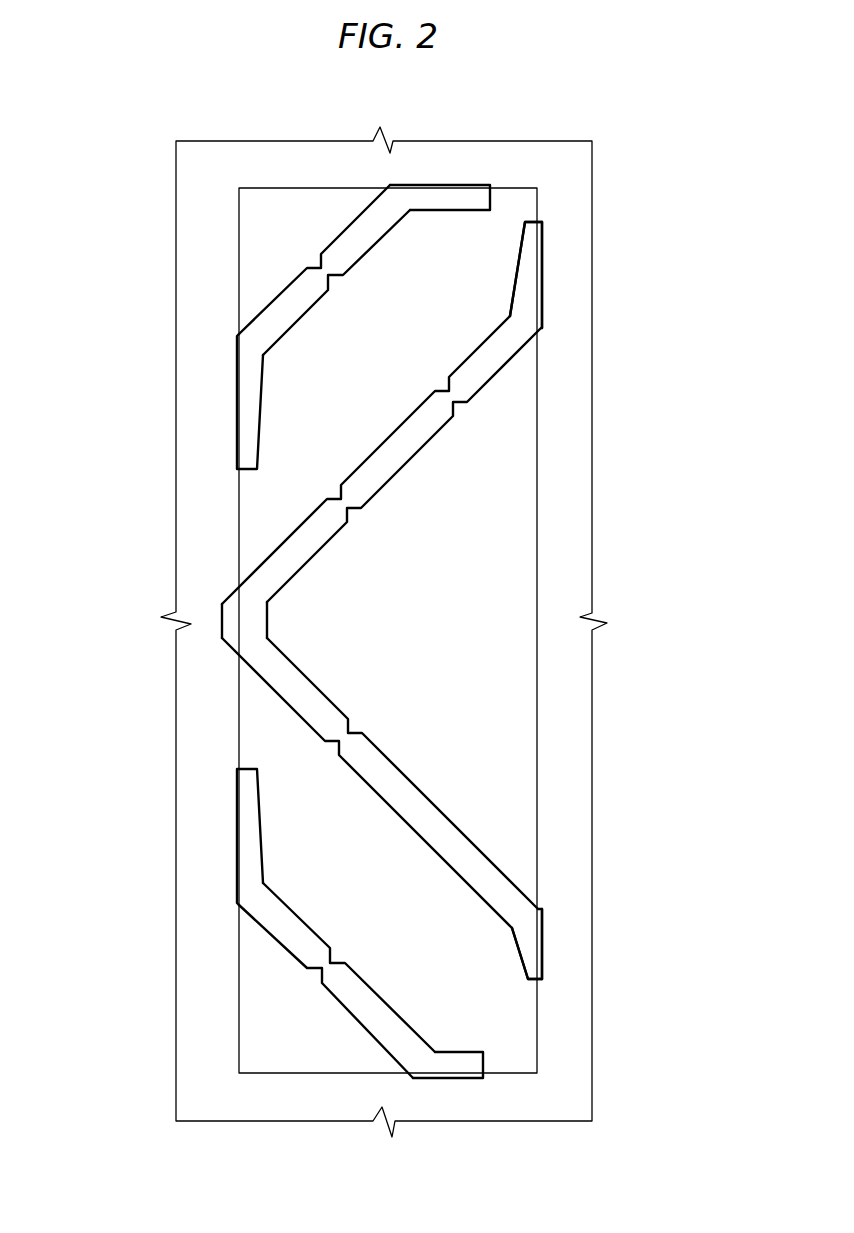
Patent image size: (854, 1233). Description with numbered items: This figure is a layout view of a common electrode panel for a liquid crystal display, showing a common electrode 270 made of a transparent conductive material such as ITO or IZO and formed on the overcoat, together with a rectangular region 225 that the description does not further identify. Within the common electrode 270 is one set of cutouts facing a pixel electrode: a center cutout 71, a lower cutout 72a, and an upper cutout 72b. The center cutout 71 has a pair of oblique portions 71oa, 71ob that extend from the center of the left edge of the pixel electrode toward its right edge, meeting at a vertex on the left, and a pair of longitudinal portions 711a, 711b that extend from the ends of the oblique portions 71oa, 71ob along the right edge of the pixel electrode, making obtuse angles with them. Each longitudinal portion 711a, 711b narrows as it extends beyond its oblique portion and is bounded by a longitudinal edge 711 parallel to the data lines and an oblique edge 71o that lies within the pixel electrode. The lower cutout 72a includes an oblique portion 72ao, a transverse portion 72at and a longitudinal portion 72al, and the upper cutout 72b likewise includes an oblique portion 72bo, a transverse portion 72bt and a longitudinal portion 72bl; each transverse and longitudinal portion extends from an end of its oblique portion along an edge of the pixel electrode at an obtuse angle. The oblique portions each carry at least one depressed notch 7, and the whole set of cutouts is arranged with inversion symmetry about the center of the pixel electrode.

The depressed notch 7 is at (420, 643).
The center cutout 71 is at (476, 608).
The oblique portion 71oa is at (409, 779).
The oblique portion 71ob is at (412, 458).
The longitudinal edge 711 is at (542, 254).
The oblique edge 71o is at (516, 287).
The longitudinal portion 711a is at (667, 920).
The longitudinal portion 711b is at (667, 243).
The lower cutout 72a is at (296, 975).
The oblique portion 72ao is at (347, 1010).
The longitudinal portion 72al is at (237, 828).
The transverse portion 72at is at (450, 1078).
The upper cutout 72b is at (300, 286).
The oblique portion 72bo is at (332, 243).
The longitudinal portion 72bl is at (237, 403).
The transverse portion 72bt is at (441, 185).
The substrate region 225 is at (537, 731).
The common electrode 270 is at (592, 450).